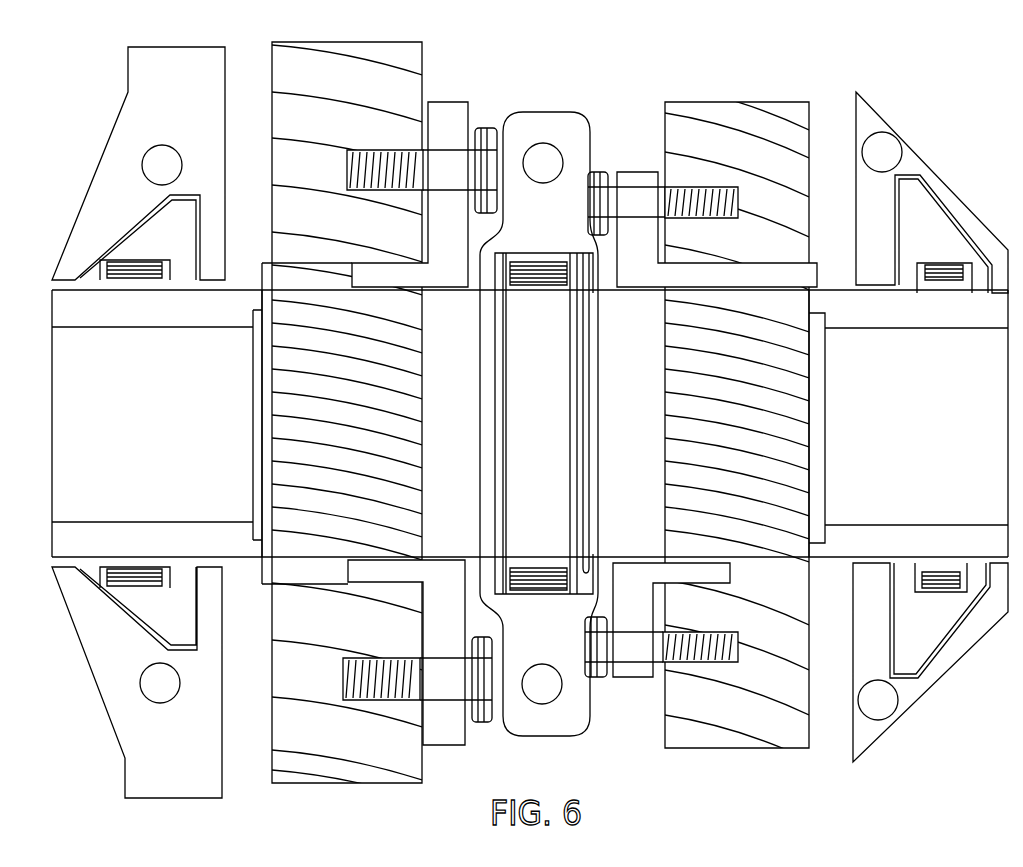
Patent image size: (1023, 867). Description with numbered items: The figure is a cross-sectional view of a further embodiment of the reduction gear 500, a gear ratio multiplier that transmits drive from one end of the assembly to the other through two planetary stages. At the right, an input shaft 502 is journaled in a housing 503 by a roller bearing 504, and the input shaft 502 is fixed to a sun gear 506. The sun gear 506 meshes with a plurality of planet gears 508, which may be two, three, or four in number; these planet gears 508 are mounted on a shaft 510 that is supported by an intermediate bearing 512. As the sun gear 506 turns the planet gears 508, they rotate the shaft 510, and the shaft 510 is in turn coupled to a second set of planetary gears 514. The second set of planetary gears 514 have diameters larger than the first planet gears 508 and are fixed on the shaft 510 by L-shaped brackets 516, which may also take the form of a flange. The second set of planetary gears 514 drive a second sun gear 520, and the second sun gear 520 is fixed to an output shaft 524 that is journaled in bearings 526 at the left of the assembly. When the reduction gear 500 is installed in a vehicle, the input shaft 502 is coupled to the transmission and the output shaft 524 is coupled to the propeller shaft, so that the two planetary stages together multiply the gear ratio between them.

The reduction gear 500 is at (530, 417).
The input shaft 502 is at (918, 439).
The housing 503 is at (888, 124).
The roller bearing 504 is at (943, 263).
The sun gear 506 is at (812, 298).
The planet gears 508 is at (736, 112).
The shaft 510 is at (643, 409).
The intermediate bearing 512 is at (594, 124).
The second set of planetary gears 514 is at (333, 225).
The L-shaped brackets 516 is at (470, 104).
The second sun gear 520 is at (408, 377).
The output shaft 524 is at (166, 392).
The bearings 526 is at (147, 262).